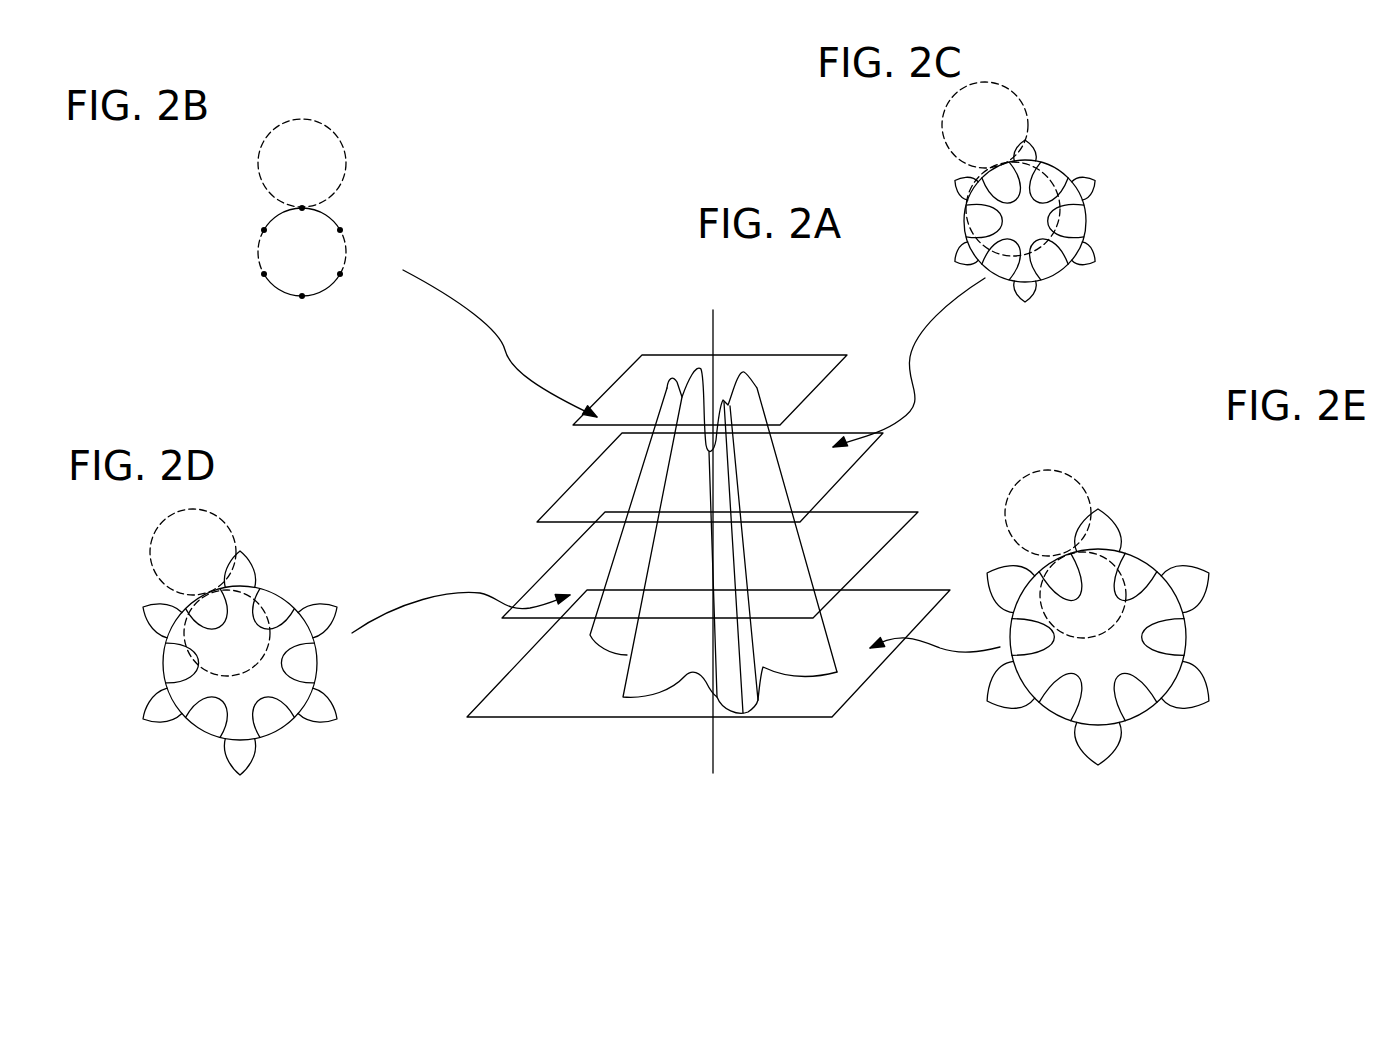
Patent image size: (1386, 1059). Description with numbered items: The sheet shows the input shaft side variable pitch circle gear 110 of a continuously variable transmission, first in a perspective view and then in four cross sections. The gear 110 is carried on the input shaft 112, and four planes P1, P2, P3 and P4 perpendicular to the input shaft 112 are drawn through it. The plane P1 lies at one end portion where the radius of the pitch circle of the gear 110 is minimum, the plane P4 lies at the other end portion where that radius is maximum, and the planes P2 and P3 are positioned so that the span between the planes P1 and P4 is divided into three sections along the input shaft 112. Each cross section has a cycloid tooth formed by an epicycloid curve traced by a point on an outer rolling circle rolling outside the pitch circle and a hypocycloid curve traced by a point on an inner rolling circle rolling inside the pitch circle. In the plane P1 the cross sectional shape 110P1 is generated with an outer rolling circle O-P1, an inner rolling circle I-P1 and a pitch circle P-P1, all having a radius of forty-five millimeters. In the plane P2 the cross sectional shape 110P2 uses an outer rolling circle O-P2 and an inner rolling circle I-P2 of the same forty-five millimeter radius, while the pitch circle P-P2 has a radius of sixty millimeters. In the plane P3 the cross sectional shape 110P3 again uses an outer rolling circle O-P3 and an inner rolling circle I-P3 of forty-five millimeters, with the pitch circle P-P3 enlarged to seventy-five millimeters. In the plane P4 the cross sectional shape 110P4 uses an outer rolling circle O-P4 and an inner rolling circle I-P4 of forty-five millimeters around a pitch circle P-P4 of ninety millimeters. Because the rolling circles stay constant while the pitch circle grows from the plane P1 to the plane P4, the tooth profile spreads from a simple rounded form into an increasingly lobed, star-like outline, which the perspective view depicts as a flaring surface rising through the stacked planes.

In FIG. 2A, the input shaft side variable pitch circle gear 110 is at (668, 386).
In FIG. 2A, the input shaft 112 is at (715, 757).
In FIG. 2A, the plane P1 is at (790, 352).
In FIG. 2A, the plane P2 is at (827, 428).
In FIG. 2A, the plane P3 is at (858, 507).
In FIG. 2A, the plane P4 is at (895, 588).
In FIG. 2B, the outer rolling circle O-P1 is at (343, 147).
In FIG. 2B, the inner rolling circle I-P1 is at (341, 230).
In FIG. 2B, the pitch circle P-P1 is at (368, 252).
In FIG. 2B, the cross sectional shape 110P1 is at (302, 295).
In FIG. 2C, the outer rolling circle O-P2 is at (1027, 102).
In FIG. 2C, the inner rolling circle I-P2 is at (1062, 160).
In FIG. 2C, the pitch circle P-P2 is at (1087, 220).
In FIG. 2C, the cross sectional shape 110P2 is at (1090, 247).
In FIG. 2D, the outer rolling circle O-P3 is at (223, 522).
In FIG. 2D, the inner rolling circle I-P3 is at (262, 607).
In FIG. 2D, the pitch circle P-P3 is at (317, 662).
In FIG. 2D, the cross sectional shape 110P3 is at (330, 720).
In FIG. 2E, the outer rolling circle O-P4 is at (1080, 483).
In FIG. 2E, the inner rolling circle I-P4 is at (1127, 582).
In FIG. 2E, the pitch circle P-P4 is at (1188, 633).
In FIG. 2E, the cross sectional shape 110P4 is at (1210, 688).